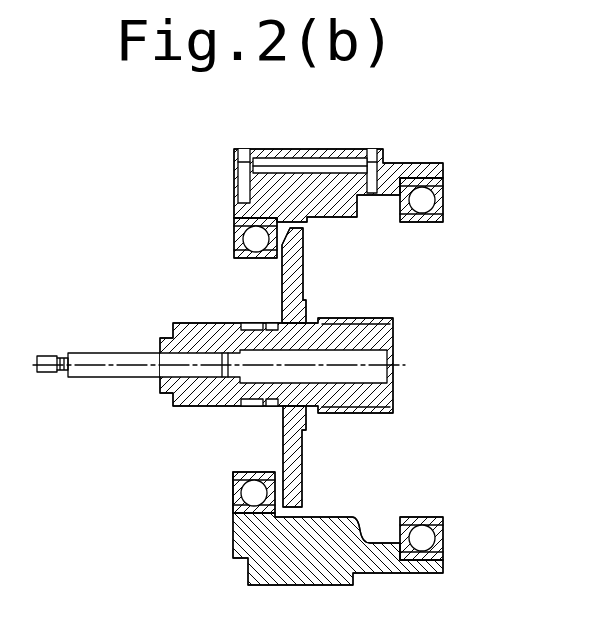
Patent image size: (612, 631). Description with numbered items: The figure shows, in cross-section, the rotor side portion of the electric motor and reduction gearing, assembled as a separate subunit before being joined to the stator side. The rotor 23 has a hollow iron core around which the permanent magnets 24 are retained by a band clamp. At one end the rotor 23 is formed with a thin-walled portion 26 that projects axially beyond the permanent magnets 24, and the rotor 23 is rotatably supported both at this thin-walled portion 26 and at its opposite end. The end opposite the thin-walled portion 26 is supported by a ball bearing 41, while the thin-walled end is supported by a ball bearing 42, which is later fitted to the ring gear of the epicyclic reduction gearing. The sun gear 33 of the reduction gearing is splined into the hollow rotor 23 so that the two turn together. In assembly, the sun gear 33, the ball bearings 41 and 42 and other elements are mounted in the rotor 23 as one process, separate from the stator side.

The rotor 23 is at (317, 178).
The permanent magnets 24 is at (233, 548).
The thin-walled portion 26 is at (416, 162).
The sun gear 33 is at (208, 324).
The ball bearing 41 is at (233, 236).
The ball bearing 42 is at (428, 200).